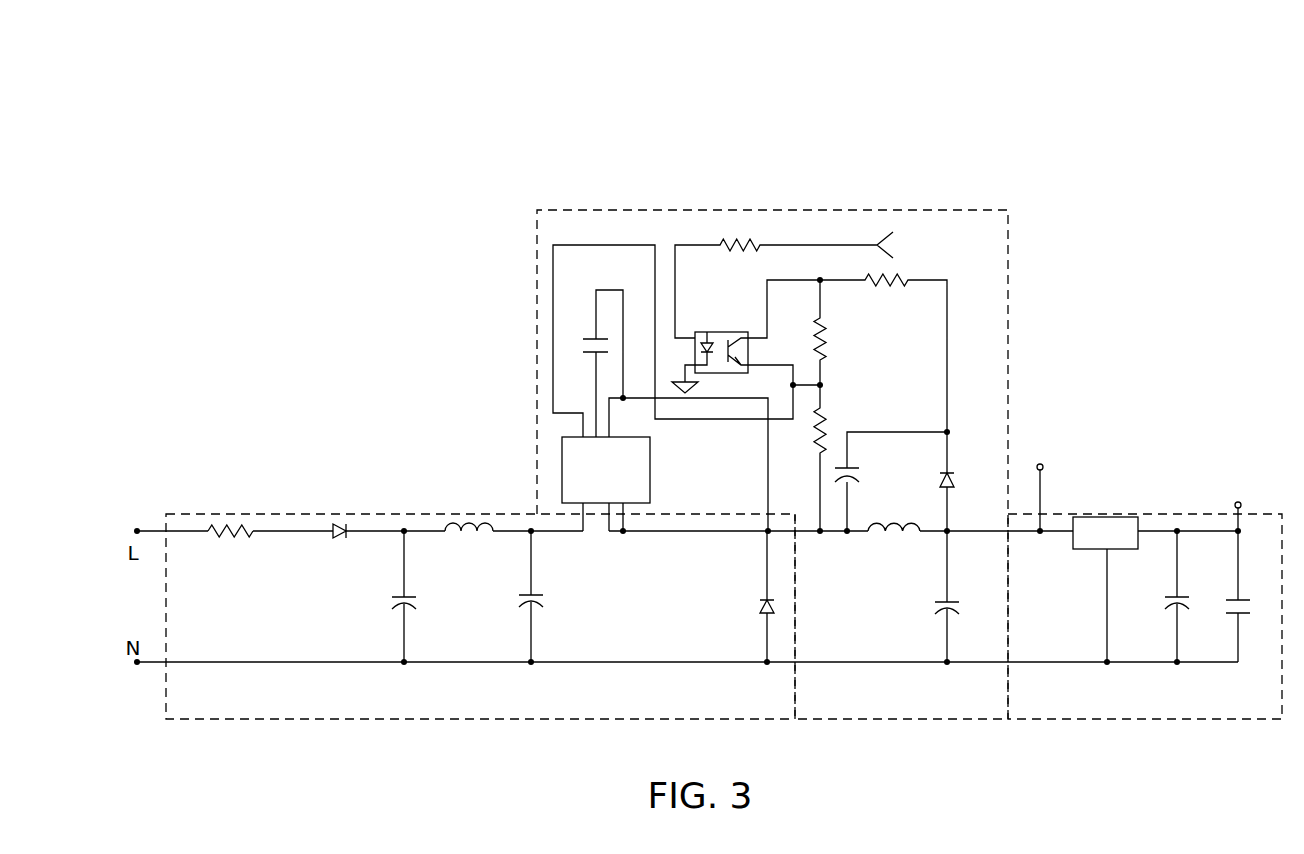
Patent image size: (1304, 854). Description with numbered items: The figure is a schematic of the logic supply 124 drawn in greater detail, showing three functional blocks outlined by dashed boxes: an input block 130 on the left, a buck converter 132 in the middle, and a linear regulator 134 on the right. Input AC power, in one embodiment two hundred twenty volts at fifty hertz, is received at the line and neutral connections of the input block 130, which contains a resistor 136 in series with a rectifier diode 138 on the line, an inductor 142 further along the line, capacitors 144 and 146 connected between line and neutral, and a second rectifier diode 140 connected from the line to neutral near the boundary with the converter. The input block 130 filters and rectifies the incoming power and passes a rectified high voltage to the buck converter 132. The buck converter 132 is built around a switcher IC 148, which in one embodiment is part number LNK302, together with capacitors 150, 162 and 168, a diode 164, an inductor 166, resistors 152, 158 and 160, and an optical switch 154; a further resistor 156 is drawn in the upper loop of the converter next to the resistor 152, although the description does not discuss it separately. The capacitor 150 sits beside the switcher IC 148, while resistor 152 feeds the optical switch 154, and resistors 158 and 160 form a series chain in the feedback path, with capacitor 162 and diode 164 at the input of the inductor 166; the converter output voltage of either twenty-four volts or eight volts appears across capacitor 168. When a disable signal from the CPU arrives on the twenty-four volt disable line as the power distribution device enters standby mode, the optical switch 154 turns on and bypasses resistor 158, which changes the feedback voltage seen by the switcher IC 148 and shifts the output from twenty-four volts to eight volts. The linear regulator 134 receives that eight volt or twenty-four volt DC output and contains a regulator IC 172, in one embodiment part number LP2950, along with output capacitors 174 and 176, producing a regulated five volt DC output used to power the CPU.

The logic supply 124 is at (1037, 165).
The input block 130 is at (498, 690).
The buck converter 132 is at (975, 250).
The linear regulator 134 is at (1142, 694).
The resistor 136 is at (225, 538).
The rectifier diode 138 is at (338, 540).
The rectifier diode 140 is at (759, 602).
The inductor 142 is at (479, 540).
The capacitor 144 is at (398, 601).
The capacitor 146 is at (540, 600).
The switcher IC 148 is at (652, 450).
The capacitor 150 is at (587, 331).
The resistor 152 is at (750, 238).
The optical switch 154 is at (700, 331).
The resistor 156 is at (908, 274).
The resistor 158 is at (827, 345).
The resistor 160 is at (826, 412).
The capacitor 162 is at (856, 476).
The diode 164 is at (953, 481).
The inductor 166 is at (898, 542).
The capacitor 168 is at (940, 605).
The regulator IC 172 is at (1090, 552).
The output capacitor 174 is at (1170, 603).
The output capacitor 176 is at (1226, 606).